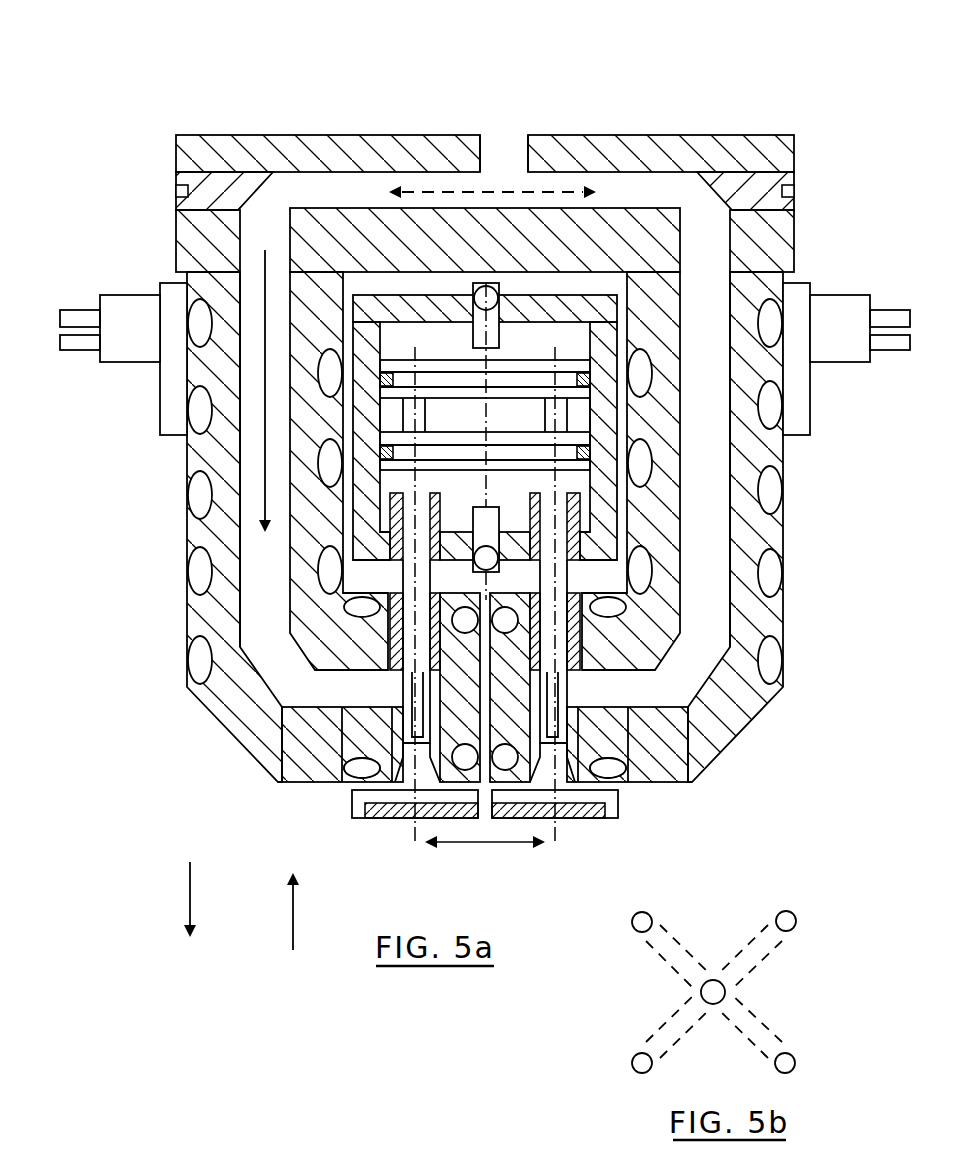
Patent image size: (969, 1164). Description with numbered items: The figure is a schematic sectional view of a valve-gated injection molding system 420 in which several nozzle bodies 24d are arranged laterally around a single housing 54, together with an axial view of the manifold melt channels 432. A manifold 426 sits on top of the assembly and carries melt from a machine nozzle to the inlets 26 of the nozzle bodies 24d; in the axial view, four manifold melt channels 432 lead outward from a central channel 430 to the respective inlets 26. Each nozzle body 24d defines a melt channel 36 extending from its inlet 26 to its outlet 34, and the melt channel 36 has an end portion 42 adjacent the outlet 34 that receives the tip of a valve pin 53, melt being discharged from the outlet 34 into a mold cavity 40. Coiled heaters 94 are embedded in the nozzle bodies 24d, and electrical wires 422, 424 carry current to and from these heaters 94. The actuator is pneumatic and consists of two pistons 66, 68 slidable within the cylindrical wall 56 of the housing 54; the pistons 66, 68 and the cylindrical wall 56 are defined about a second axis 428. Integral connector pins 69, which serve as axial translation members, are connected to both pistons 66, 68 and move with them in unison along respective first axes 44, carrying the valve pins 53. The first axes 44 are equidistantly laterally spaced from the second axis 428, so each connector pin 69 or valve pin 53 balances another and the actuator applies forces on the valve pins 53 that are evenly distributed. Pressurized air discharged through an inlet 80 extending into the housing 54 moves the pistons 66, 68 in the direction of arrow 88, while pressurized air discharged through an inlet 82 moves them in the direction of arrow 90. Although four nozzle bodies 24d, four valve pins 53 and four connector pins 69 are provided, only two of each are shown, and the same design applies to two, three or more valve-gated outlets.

In FIG. 5A, the valve-gated injection molding system 420 is at (255, 88).
In FIG. 5A, the manifold 426 is at (415, 146).
In FIG. 5A, the central channel 430 is at (505, 150).
In FIG. 5B, the central channel 430 is at (716, 980).
In FIG. 5A, the manifold melt channels 432 is at (330, 172).
In FIG. 5B, the manifold melt channels 432 is at (675, 1016).
In FIG. 5A, the housing 54 is at (580, 300).
In FIG. 5A, the inlet 26 is at (262, 266).
In FIG. 5B, the inlet 26 is at (634, 915).
In FIG. 5A, the electrical wire 422 is at (98, 312).
In FIG. 5A, the electrical wire 424 is at (95, 346).
In FIG. 5A, the first axis 44 is at (413, 358).
In FIG. 5A, the inlet 80 is at (475, 342).
In FIG. 5A, the inlet 82 is at (473, 546).
In FIG. 5A, the piston 66 is at (512, 362).
In FIG. 5A, the cylindrical wall 56 is at (600, 385).
In FIG. 5A, the piston 68 is at (455, 445).
In FIG. 5A, the second axis 428 is at (498, 410).
In FIG. 5A, the nozzle body 24d is at (200, 450).
In FIG. 5A, the melt channel 36 is at (243, 482).
In FIG. 5A, the coiled heater 94 is at (197, 570).
In FIG. 5A, the integral connector pin 69 is at (432, 489).
In FIG. 5A, the valve pin 53 is at (403, 700).
In FIG. 5A, the end portion 42 is at (398, 722).
In FIG. 5A, the mold cavity 40 is at (352, 808).
In FIG. 5A, the outlet 34 is at (423, 787).
In FIG. 5A, the arrow 88 is at (193, 892).
In FIG. 5A, the arrow 90 is at (300, 910).